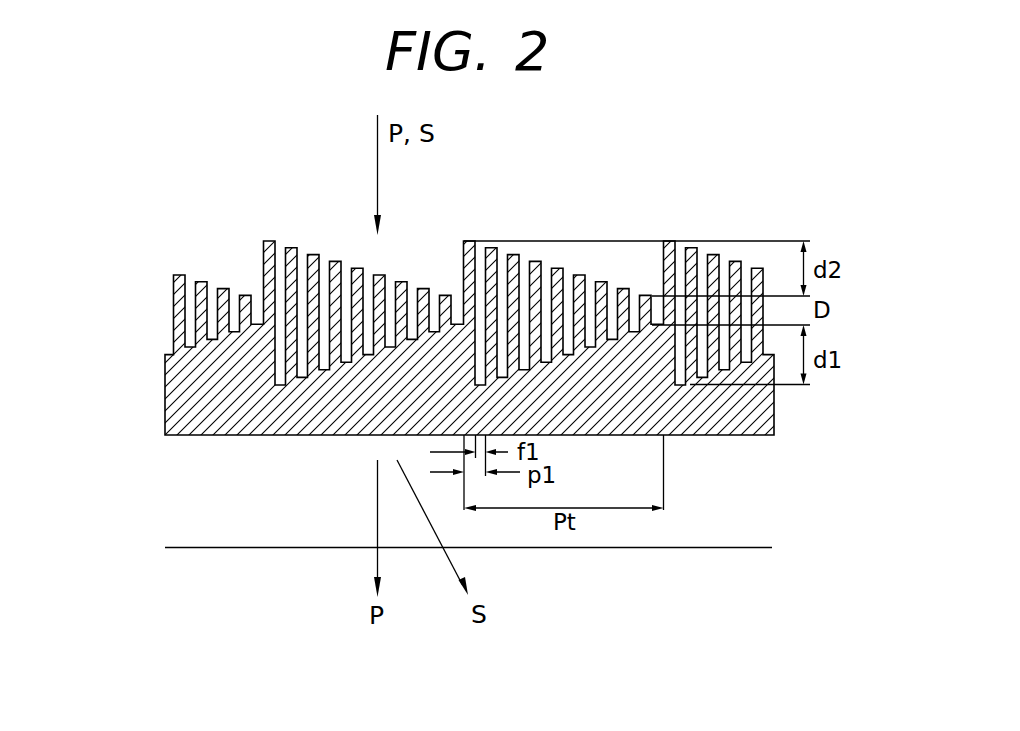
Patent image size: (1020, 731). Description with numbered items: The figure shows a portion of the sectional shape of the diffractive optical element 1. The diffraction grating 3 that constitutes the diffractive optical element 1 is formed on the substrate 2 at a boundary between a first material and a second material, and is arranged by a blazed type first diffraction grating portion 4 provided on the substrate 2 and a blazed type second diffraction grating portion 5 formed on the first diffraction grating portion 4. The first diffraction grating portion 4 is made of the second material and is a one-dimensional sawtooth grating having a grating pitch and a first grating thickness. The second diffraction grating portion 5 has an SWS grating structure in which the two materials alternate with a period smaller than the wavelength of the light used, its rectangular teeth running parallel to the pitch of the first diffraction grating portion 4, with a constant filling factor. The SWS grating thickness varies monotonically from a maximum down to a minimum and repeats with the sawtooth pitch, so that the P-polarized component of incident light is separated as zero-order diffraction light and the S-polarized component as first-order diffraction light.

The diffractive optical element 1 is at (780, 221).
The substrate 2 is at (733, 518).
The diffraction grating 3 is at (429, 337).
The first diffraction grating portion 4 is at (200, 380).
The second diffraction grating portion 5 is at (117, 400).